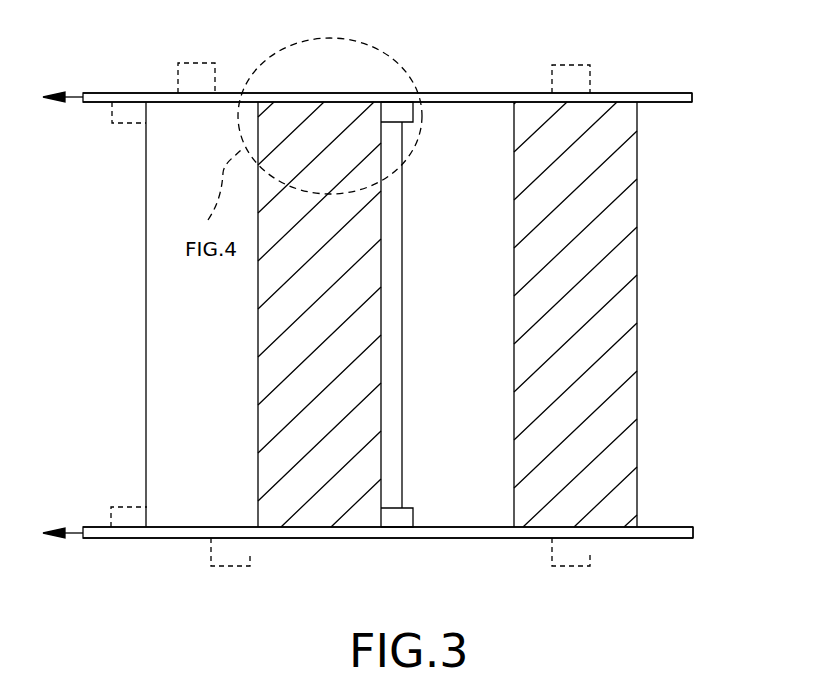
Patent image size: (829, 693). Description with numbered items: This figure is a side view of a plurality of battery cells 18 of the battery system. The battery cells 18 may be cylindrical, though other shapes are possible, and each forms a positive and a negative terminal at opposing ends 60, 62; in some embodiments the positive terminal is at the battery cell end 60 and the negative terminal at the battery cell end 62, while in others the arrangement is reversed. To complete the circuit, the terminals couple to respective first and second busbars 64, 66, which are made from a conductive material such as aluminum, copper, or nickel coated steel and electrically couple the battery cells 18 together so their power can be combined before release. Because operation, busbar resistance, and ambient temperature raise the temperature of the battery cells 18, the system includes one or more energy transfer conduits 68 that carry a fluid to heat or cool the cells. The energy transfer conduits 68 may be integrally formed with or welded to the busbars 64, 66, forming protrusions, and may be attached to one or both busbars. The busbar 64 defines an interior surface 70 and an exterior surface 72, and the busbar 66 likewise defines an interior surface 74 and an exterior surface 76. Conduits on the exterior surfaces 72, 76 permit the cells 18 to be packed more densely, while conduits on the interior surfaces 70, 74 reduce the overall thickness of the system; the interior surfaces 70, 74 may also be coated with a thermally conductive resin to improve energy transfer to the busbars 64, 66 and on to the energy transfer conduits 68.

The battery cell 18 is at (175, 333).
The battery cell end 60 is at (177, 108).
The battery cell end 62 is at (180, 530).
The first busbar 64 is at (678, 532).
The second busbar 66 is at (680, 91).
The energy transfer conduit 68 is at (205, 68).
The interior surface 70 is at (690, 528).
The exterior surface 72 is at (663, 540).
The interior surface 74 is at (658, 103).
The exterior surface 76 is at (652, 92).